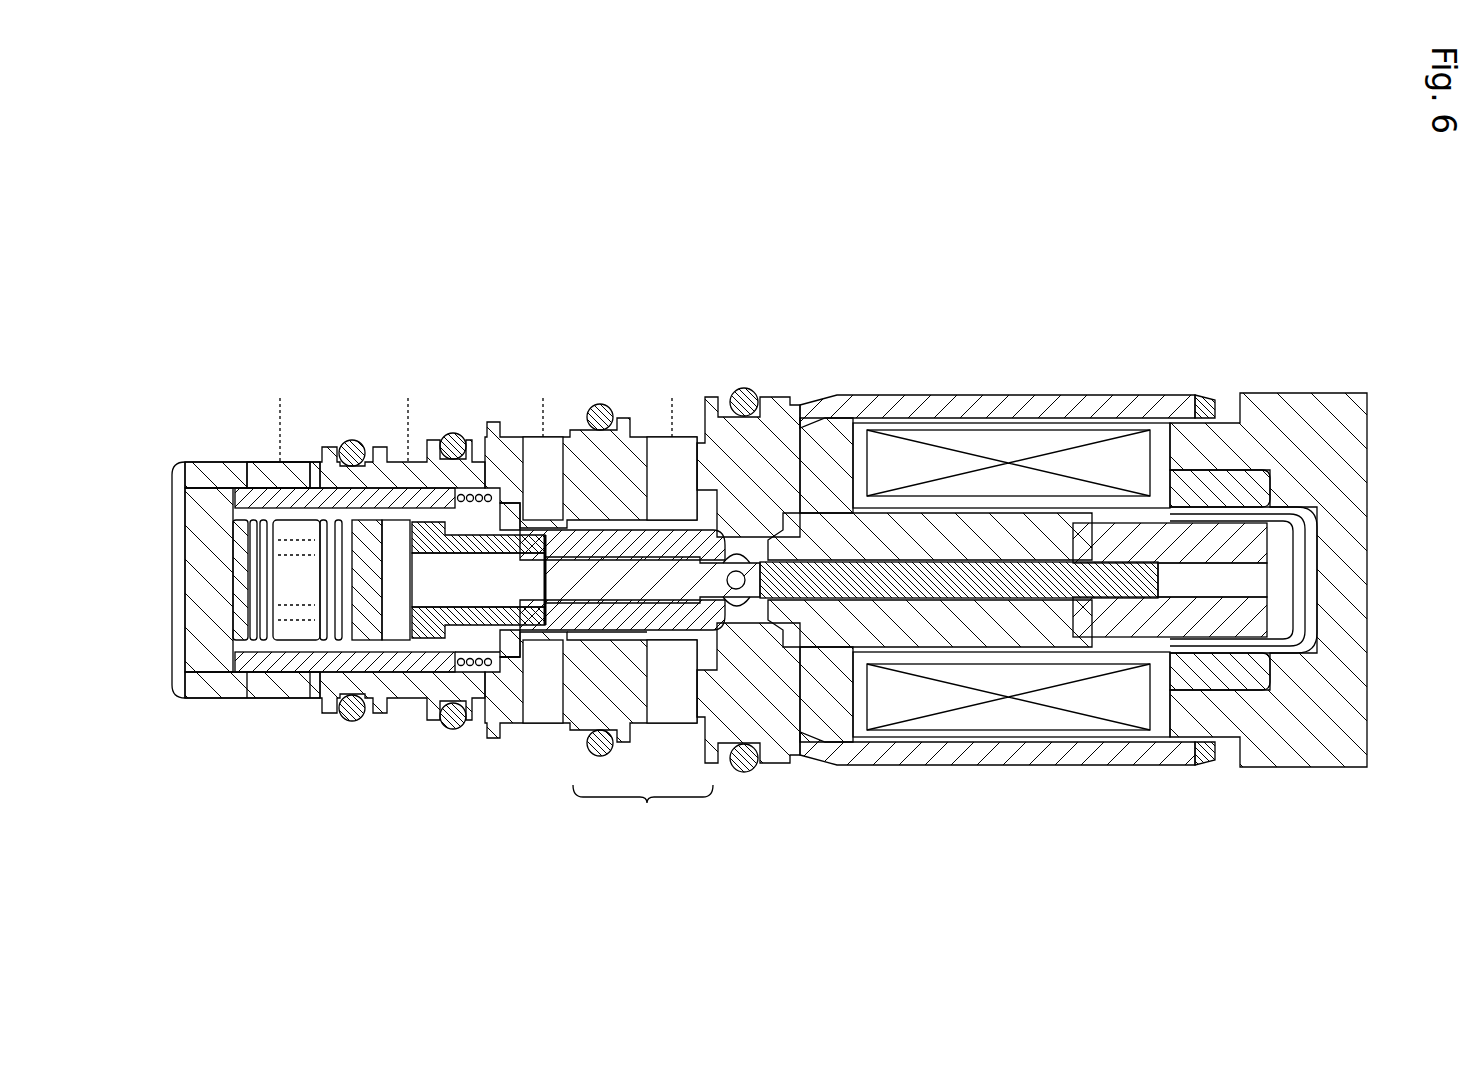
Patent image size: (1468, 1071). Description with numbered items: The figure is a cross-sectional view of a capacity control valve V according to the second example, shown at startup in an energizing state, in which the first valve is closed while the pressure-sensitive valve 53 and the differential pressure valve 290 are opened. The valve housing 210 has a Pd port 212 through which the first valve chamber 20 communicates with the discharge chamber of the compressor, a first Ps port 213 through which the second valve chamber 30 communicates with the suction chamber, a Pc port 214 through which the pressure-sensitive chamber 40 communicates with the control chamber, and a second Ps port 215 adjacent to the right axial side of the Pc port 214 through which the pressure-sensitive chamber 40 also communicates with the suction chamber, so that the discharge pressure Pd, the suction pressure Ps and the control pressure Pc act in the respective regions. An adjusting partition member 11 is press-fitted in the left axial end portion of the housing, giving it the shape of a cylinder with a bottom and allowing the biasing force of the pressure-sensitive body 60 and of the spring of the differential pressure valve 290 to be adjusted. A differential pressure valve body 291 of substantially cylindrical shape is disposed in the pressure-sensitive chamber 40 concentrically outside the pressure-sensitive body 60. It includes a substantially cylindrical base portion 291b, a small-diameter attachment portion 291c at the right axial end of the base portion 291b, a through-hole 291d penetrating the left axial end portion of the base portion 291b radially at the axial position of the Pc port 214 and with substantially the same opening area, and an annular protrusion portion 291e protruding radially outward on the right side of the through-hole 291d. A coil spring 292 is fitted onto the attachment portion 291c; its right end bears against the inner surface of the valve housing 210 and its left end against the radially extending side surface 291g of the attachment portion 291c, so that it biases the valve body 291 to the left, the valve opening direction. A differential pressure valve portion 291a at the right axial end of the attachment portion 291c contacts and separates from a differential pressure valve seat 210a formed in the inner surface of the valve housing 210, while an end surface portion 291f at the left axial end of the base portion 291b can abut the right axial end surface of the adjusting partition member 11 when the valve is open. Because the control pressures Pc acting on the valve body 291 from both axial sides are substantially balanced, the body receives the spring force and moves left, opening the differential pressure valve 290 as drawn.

The capacity control valve V is at (755, 502).
The valve housing 210 is at (172, 456).
The differential pressure valve seat 210a is at (622, 705).
The adjusting partition member 11 is at (190, 598).
The Pc port 214 is at (262, 488).
The second Ps port 215 is at (400, 462).
The pressure-sensitive chamber 40 is at (292, 540).
The pressure-sensitive body 60 is at (268, 648).
The pressure-sensitive valve 53 is at (420, 642).
The first valve chamber 20 is at (553, 525).
The second valve chamber 30 is at (723, 535).
The Pd port 212 is at (545, 470).
The first Ps port 213 is at (700, 515).
The differential pressure valve 290 is at (643, 808).
The differential pressure valve body 291 is at (318, 680).
The differential pressure valve portion 291a is at (500, 658).
The base portion 291b is at (414, 692).
The attachment portion 291c is at (470, 700).
The through-hole 291d is at (305, 658).
The annular protrusion portion 291e is at (346, 722).
The end surface portion 291f is at (236, 648).
The side surface 291g is at (473, 486).
The coil spring 292 is at (495, 668).
The control pressure Pc is at (278, 413).
The suction pressure Ps is at (538, 413).
The discharge pressure Pd is at (544, 401).